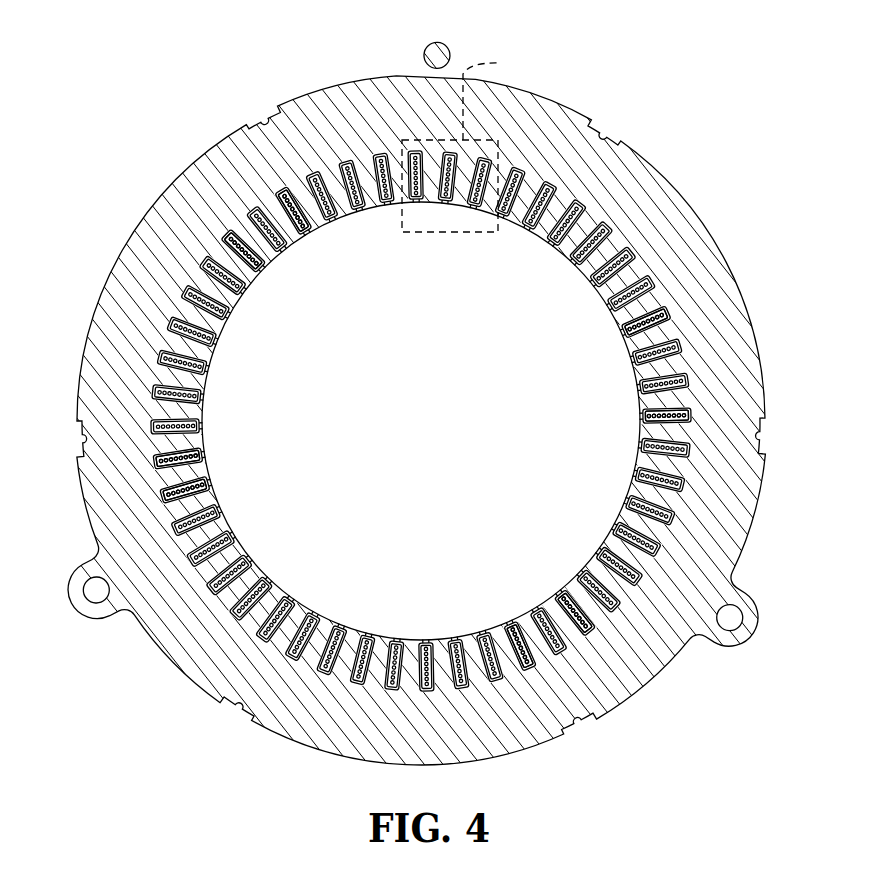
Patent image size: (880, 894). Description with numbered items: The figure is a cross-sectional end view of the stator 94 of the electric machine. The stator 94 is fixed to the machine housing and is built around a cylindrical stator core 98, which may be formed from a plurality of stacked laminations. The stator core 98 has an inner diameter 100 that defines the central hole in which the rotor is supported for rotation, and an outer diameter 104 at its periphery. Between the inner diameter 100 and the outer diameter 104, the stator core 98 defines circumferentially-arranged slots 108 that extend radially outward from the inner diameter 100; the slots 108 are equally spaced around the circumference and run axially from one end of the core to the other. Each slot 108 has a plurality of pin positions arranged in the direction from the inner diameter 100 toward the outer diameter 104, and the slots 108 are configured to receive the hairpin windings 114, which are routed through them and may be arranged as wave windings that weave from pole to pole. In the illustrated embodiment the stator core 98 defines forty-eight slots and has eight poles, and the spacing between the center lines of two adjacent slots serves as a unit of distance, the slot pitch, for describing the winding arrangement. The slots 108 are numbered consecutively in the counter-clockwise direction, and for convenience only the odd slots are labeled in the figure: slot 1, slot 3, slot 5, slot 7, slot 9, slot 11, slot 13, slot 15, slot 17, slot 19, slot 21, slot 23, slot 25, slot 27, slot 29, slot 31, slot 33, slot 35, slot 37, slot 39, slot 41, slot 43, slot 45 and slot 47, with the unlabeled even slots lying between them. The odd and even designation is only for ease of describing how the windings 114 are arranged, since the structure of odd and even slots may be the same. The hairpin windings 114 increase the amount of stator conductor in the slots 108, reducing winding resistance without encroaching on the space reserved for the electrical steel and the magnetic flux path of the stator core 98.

The stator 94 is at (139, 41).
The stator core 98 is at (678, 188).
The inner diameter 100 is at (255, 280).
The outer diameter 104 is at (295, 100).
The slots 108 is at (343, 232).
The hairpin windings 114 is at (222, 231).
The slot 1 is at (477, 196).
The slot 3 is at (416, 190).
The slot 5 is at (355, 198).
The slot 7 is at (298, 223).
The slot 9 is at (251, 260).
The slot 11 is at (218, 310).
The slot 13 is at (197, 367).
The slot 15 is at (191, 425).
The slot 17 is at (199, 484).
The slot 19 is at (224, 541).
The slot 21 is at (261, 588).
The slot 23 is at (311, 624).
The slot 25 is at (368, 646).
The slot 27 is at (425, 652).
The slot 29 is at (483, 643).
The slot 31 is at (540, 619).
The slot 33 is at (587, 581).
The slot 35 is at (623, 532).
The slot 37 is at (645, 474).
The slot 39 is at (651, 417).
The slot 41 is at (642, 357).
The slot 43 is at (618, 301).
The slot 45 is at (580, 253).
The slot 47 is at (531, 217).